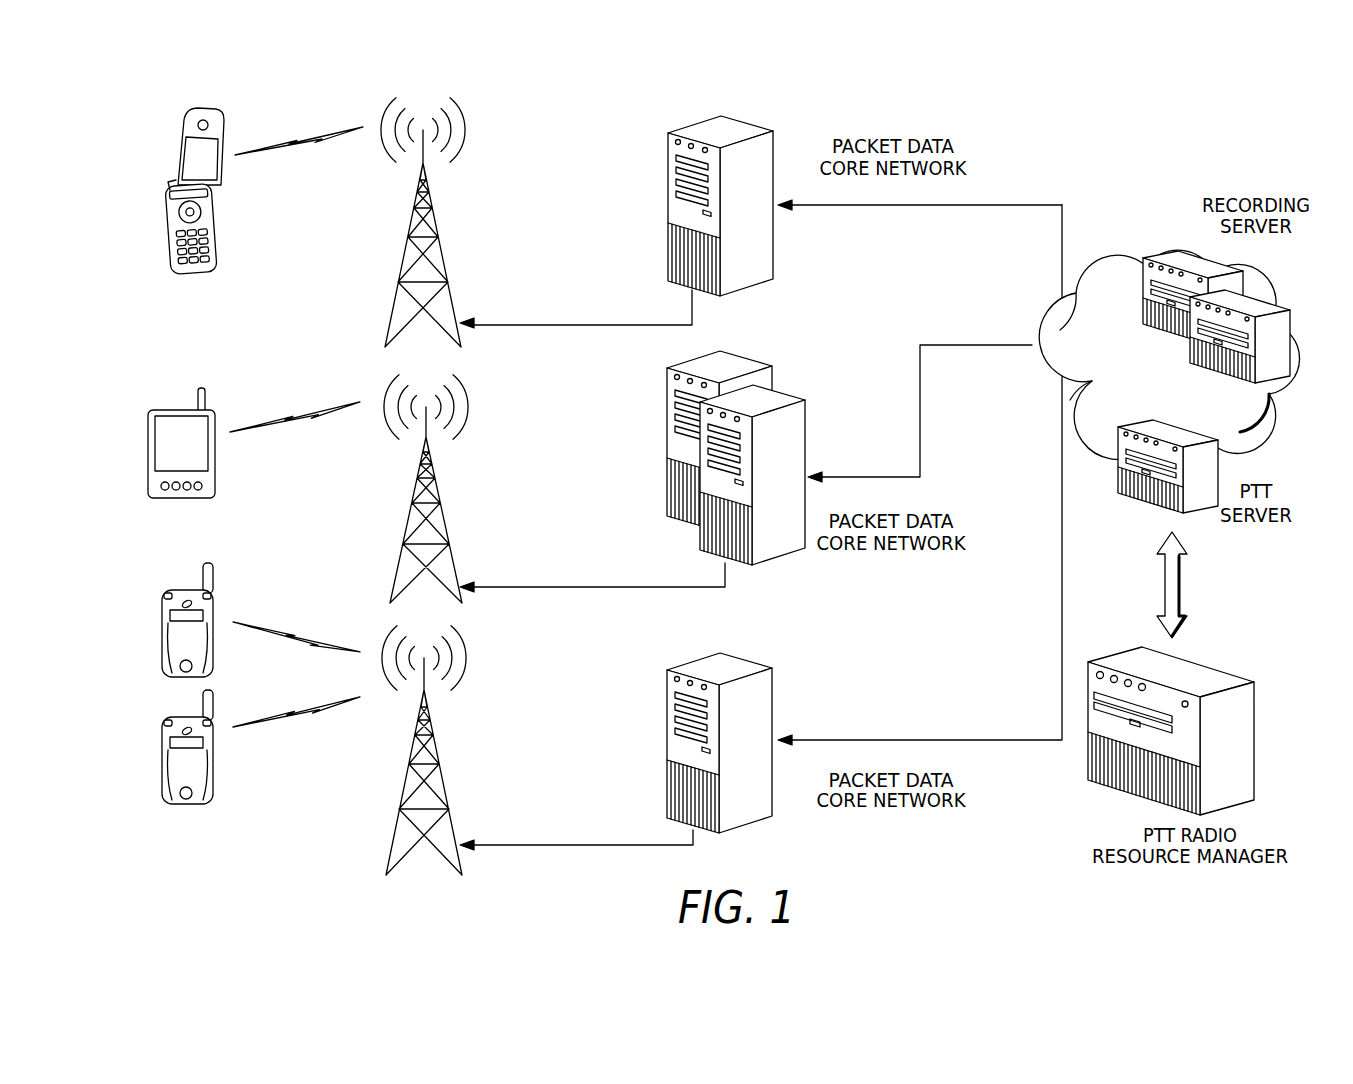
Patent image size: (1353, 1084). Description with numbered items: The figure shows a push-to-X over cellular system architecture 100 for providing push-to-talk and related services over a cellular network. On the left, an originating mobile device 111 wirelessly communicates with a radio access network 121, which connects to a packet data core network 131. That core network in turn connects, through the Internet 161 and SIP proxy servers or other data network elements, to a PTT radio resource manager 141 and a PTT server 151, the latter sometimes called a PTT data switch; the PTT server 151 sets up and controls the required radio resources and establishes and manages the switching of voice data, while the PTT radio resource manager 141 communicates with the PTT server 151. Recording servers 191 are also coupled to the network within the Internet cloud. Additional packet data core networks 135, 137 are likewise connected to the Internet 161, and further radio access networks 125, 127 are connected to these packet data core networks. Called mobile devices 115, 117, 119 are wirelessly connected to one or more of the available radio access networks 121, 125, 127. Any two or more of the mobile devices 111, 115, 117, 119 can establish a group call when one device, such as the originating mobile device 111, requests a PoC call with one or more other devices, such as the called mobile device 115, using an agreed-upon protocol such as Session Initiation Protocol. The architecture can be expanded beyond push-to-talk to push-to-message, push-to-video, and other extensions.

The push-to-X over cellular system architecture 100 is at (978, 887).
The originating mobile device 111 is at (188, 116).
The called mobile device 115 is at (157, 406).
The called mobile device 117 is at (170, 588).
The called mobile device 119 is at (170, 714).
The radio access network 121 is at (412, 218).
The radio access network 125 is at (412, 492).
The radio access network 127 is at (412, 743).
The packet data core network 131 is at (684, 125).
The packet data core network 135 is at (675, 360).
The packet data core network 137 is at (675, 660).
The PTT radio resource manager 141 is at (1197, 662).
The PTT server 151 is at (1185, 424).
The Internet 161 is at (1050, 290).
The recording server 191 is at (1255, 297).